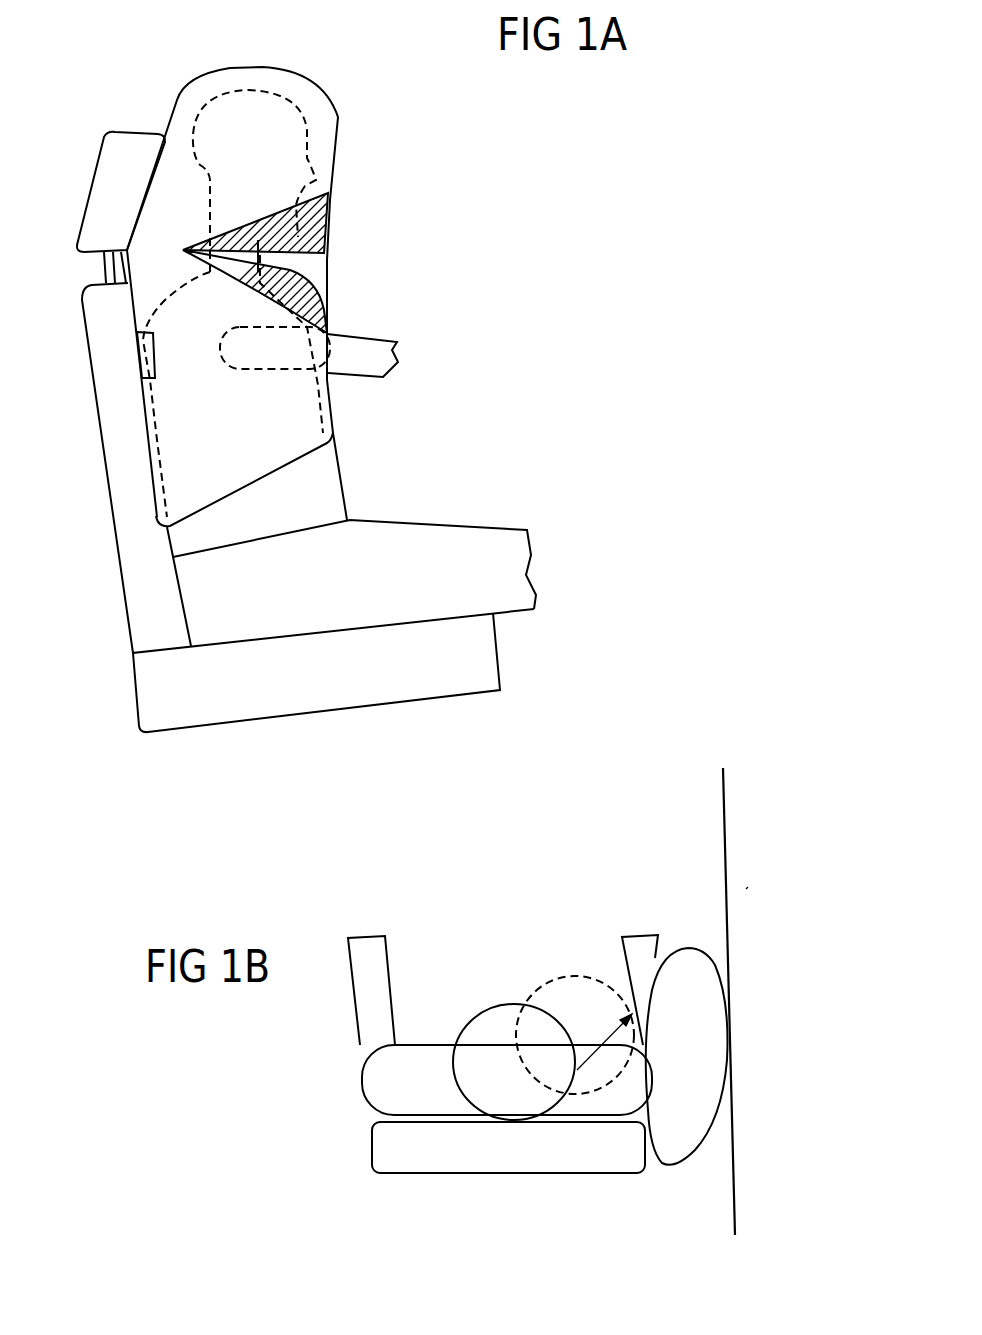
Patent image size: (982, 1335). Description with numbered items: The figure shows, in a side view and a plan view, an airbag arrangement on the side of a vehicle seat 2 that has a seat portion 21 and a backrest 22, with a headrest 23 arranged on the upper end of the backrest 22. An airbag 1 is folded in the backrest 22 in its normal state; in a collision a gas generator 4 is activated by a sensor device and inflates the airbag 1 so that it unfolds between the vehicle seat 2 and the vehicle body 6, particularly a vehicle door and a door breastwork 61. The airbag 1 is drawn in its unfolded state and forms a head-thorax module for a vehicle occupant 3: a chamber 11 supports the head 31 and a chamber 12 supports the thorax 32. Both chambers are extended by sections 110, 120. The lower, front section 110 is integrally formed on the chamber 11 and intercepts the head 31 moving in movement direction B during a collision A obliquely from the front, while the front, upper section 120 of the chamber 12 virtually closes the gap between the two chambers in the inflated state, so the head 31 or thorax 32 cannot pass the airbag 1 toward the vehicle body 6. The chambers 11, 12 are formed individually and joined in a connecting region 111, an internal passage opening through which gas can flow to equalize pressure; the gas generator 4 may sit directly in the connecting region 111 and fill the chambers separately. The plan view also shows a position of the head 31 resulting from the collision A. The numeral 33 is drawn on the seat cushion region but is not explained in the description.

In FIG. 1A, the airbag 1 is at (362, 125).
In FIG. 1B, the airbag 1 is at (685, 1180).
In FIG. 1A, the chamber 11 is at (300, 97).
In FIG. 1B, the chamber 11 is at (711, 1063).
In FIG. 1A, the lower, front section 110 is at (277, 230).
In FIG. 1A, the front, upper section 120 is at (288, 302).
In FIG. 1A, the connecting region 111 is at (175, 245).
In FIG. 1A, the chamber 12 is at (308, 433).
In FIG. 1A, the vehicle seat 2 is at (340, 713).
In FIG. 1A, the seat portion 21 is at (167, 693).
In FIG. 1A, the backrest 22 is at (153, 600).
In FIG. 1B, the backrest 22 is at (503, 1152).
In FIG. 1A, the headrest 23 is at (108, 214).
In FIG. 1A, the vehicle occupant 3 is at (320, 500).
In FIG. 1B, the vehicle occupant 3 is at (417, 1026).
In FIG. 1A, the head 31 is at (284, 158).
In FIG. 1B, the head 31 is at (493, 1023).
In FIG. 1A, the thorax 32 is at (274, 397).
In FIG. 1B, the thorax 32 is at (380, 1092).
In FIG. 1A, the pelvis / seat cushion region 33 is at (350, 578).
In FIG. 1A, the gas generator 4 is at (143, 352).
In FIG. 1B, the vehicle body 6 is at (727, 818).
In FIG. 1B, the door breastwork 61 is at (729, 951).
In FIG. 1B, the collision A is at (746, 889).
In FIG. 1B, the movement direction B is at (604, 1037).